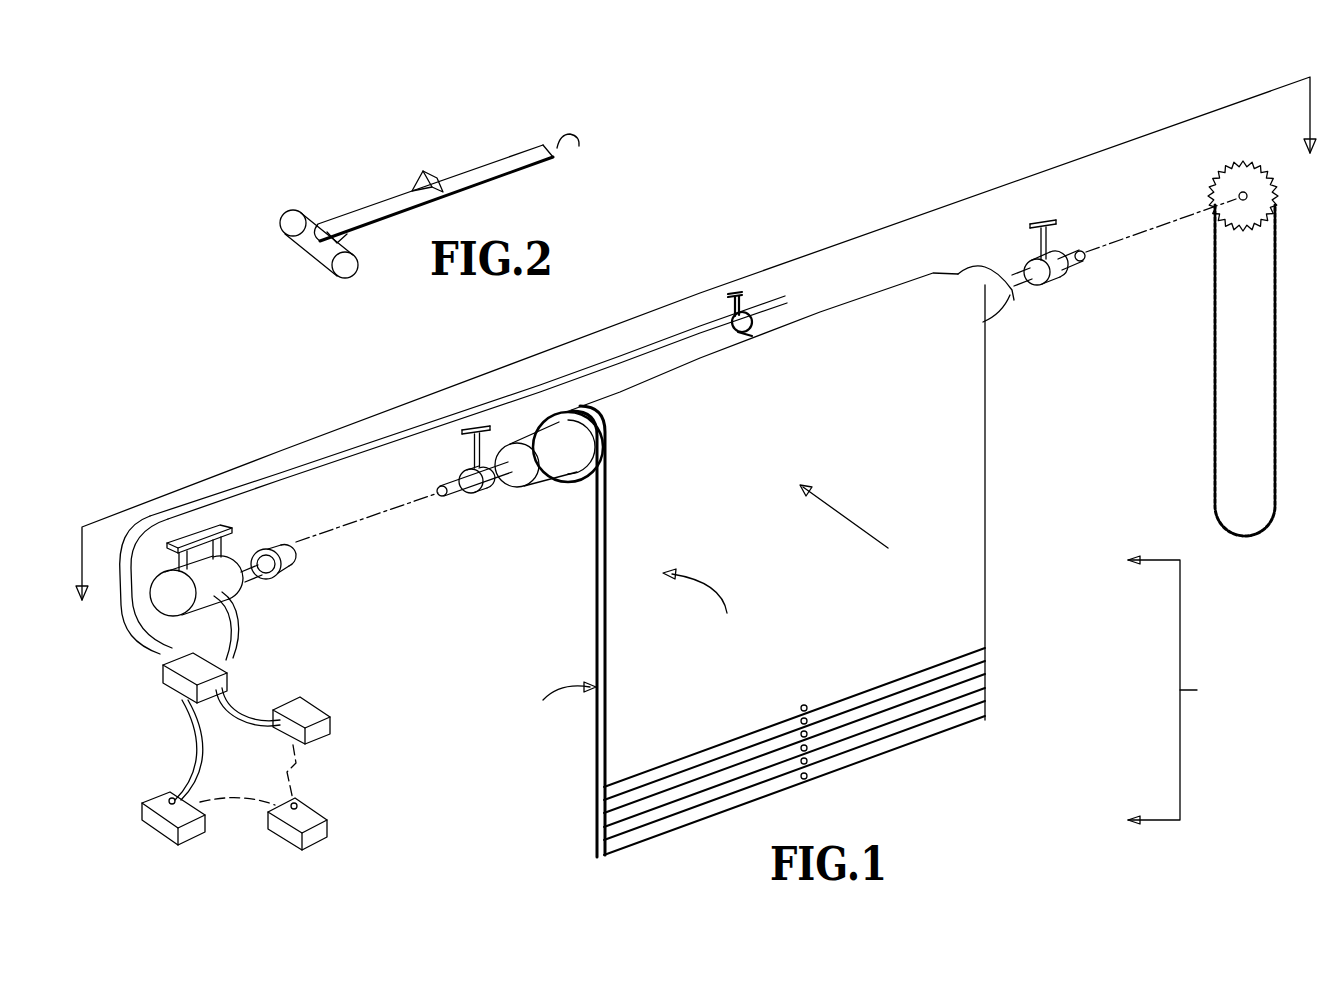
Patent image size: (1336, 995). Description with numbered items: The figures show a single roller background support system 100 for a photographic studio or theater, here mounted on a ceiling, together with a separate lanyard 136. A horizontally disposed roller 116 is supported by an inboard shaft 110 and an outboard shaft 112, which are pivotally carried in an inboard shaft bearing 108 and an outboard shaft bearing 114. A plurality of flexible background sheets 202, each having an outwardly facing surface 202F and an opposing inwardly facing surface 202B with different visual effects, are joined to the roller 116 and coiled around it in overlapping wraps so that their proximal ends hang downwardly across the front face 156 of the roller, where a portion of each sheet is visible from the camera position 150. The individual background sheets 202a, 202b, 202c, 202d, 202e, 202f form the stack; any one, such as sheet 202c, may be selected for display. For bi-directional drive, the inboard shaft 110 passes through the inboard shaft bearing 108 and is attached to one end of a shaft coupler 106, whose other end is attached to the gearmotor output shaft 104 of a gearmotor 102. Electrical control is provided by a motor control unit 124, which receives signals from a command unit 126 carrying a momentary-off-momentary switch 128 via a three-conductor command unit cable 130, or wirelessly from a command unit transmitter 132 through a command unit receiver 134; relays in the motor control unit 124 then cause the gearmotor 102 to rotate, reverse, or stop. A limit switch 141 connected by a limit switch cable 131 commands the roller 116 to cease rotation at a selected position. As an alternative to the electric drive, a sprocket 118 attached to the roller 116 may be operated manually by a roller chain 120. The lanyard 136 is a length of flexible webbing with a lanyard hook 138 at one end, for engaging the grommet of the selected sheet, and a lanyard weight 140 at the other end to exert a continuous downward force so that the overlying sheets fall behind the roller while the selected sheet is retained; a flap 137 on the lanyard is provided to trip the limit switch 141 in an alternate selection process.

In FIG. 1, the single roller background support system 100 is at (738, 277).
In FIG. 1, the gearmotor 102 is at (222, 572).
In FIG. 1, the gearmotor output shaft 104 is at (244, 566).
In FIG. 1, the shaft coupler 106 is at (285, 563).
In FIG. 1, the inboard shaft bearing 108 is at (470, 495).
In FIG. 1, the inboard shaft 110 is at (507, 470).
In FIG. 1, the outboard shaft 112 is at (1023, 282).
In FIG. 1, the outboard shaft bearing 114 is at (1055, 270).
In FIG. 1, the roller 116 is at (530, 477).
In FIG. 1, the sprocket 118 is at (1230, 188).
In FIG. 1, the roller chain 120 is at (1211, 369).
In FIG. 1, the motor control unit 124 is at (167, 678).
In FIG. 1, the command unit 126 is at (173, 825).
In FIG. 1, the switch 128 is at (248, 746).
In FIG. 1, the command unit cable 130 is at (193, 753).
In FIG. 1, the limit switch cable 131 is at (147, 623).
In FIG. 1, the command unit transmitter 132 is at (308, 837).
In FIG. 1, the command unit receiver 134 is at (337, 727).
In FIG. 2, the lanyard 136 is at (380, 207).
In FIG. 2, the flap 137 is at (425, 172).
In FIG. 2, the lanyard hook 138 is at (565, 130).
In FIG. 2, the lanyard weight 140 is at (293, 225).
In FIG. 1, the limit switch 141 is at (757, 297).
In FIG. 1, the camera position 150 is at (855, 521).
In FIG. 1, the front face of the roller 156 is at (995, 298).
In FIG. 1, the flexible background sheets 202 is at (1200, 690).
In FIG. 1, the background sheet 202a is at (973, 632).
In FIG. 1, the background sheet 202b is at (973, 658).
In FIG. 1, the background sheet 202c is at (973, 672).
In FIG. 1, the background sheet 202d is at (973, 690).
In FIG. 1, the background sheet 202e is at (973, 700).
In FIG. 1, the background sheet 202f is at (973, 713).
In FIG. 1, the outwardly facing surface 202F is at (773, 657).
In FIG. 1, the inwardly facing surface 202B is at (572, 780).